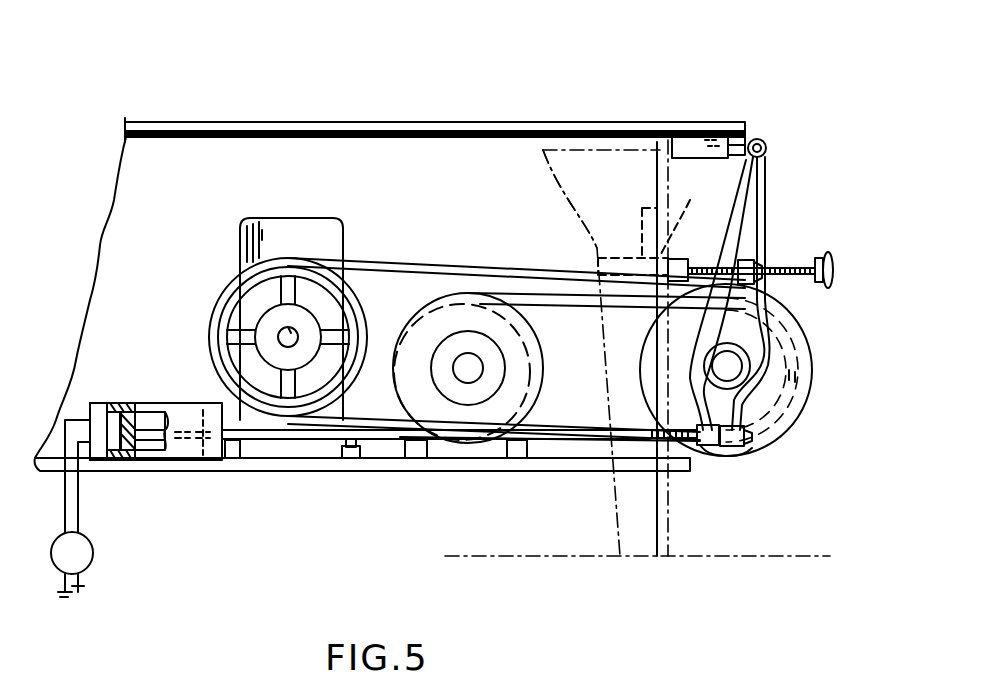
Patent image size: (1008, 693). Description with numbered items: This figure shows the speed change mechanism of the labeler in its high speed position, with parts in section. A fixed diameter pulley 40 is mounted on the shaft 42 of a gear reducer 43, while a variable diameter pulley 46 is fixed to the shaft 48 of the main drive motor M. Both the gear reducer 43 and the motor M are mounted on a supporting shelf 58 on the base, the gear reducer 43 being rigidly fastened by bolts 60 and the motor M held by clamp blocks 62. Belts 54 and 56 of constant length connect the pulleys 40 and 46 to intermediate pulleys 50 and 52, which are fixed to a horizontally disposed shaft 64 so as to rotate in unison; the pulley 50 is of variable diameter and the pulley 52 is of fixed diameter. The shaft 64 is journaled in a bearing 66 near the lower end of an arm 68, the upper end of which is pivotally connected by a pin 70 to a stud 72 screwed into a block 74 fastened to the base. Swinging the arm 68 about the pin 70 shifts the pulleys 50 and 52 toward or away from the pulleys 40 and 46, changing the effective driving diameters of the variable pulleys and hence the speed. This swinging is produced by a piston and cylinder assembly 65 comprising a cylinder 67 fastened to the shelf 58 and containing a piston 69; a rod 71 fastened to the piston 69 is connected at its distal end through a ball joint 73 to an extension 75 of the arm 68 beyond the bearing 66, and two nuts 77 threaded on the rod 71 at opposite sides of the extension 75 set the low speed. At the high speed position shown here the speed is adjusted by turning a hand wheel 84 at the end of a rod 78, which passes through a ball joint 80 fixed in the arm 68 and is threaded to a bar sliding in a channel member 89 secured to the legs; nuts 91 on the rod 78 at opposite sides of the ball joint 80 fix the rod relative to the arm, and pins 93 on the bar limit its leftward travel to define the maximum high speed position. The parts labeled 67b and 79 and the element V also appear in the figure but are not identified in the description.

The fixed diameter pulley 40 is at (218, 322).
The shaft 42 is at (288, 337).
The gear reducer 43 is at (275, 232).
The variable diameter pulley 46 is at (530, 346).
The shaft 48 is at (477, 370).
The intermediate pulley 50 is at (820, 327).
The intermediate pulley 52 is at (800, 366).
The belt 54 is at (405, 258).
The belt 56 is at (527, 290).
The supporting shelf 58 is at (352, 462).
The bolts 60 is at (356, 438).
The clamp blocks 62 is at (518, 452).
The shaft 64 is at (735, 364).
The piston and cylinder assembly 65 is at (106, 390).
The bearing 66 is at (742, 377).
The cylinder 67 is at (168, 402).
The solenoid frame 67b is at (130, 345).
The arm 68 is at (768, 210).
The piston 69 is at (130, 455).
The pin 70 is at (768, 150).
The rod 71 is at (278, 440).
The stud 72 is at (750, 140).
The ball joint 73 is at (716, 448).
The block 74 is at (686, 142).
The extension 75 is at (772, 425).
The nuts 77 is at (686, 442).
The rod 78 is at (800, 268).
The screw mounting block 79 is at (680, 262).
The ball joint 80 is at (762, 266).
The hand wheel 84 is at (833, 271).
The channel member 89 is at (645, 240).
The nuts 91 is at (727, 165).
The pins 93 is at (680, 248).
The main drive motor M is at (468, 280).
The voltmeter V is at (72, 508).